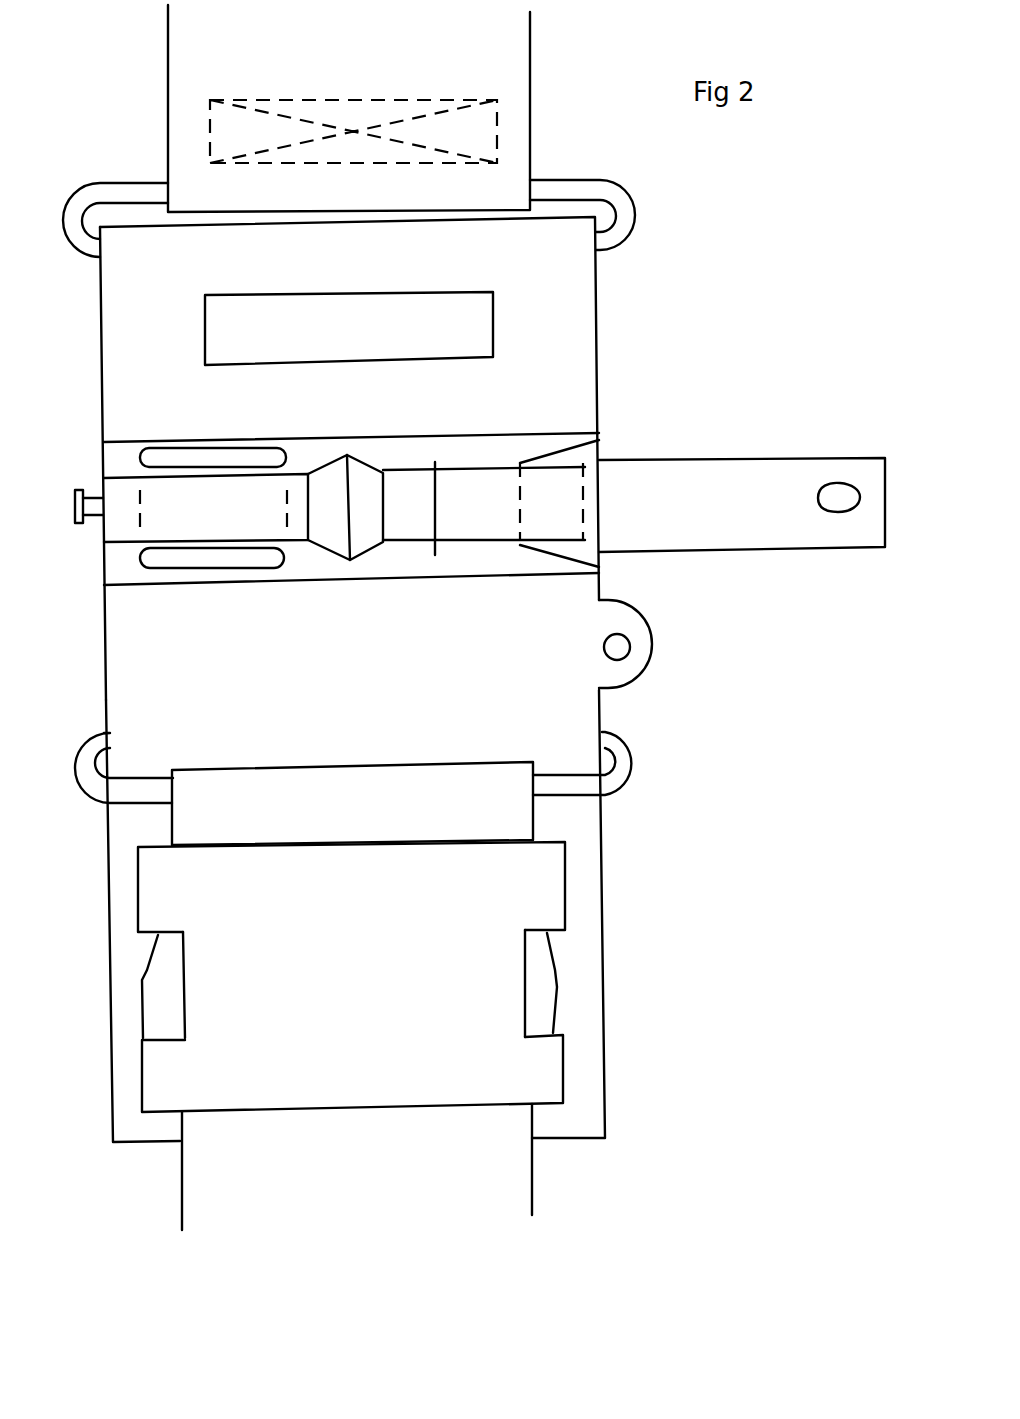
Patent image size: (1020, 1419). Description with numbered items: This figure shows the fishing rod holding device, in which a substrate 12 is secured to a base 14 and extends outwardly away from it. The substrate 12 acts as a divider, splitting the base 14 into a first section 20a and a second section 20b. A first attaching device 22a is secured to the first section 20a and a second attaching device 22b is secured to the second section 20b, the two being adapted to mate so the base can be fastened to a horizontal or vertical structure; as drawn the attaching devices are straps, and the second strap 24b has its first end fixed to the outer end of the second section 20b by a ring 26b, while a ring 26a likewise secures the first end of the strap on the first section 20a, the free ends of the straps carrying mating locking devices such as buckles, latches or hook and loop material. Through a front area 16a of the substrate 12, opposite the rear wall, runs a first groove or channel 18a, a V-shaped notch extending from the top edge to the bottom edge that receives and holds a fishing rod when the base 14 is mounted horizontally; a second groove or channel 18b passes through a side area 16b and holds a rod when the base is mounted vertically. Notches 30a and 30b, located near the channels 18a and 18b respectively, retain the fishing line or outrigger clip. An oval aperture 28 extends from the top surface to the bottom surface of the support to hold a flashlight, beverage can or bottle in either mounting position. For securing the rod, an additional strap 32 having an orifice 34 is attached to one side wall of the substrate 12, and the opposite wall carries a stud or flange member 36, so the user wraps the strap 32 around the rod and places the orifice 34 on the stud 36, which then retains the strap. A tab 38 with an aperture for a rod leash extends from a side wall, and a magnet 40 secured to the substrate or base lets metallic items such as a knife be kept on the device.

The substrate 12 is at (117, 533).
The base 14 is at (587, 1085).
The front area 16a is at (313, 450).
The side area 16b is at (92, 460).
The first groove or channel 18a is at (337, 538).
The second groove or channel 18b is at (585, 553).
The first section 20a is at (567, 215).
The second section 20b is at (615, 1125).
The first attaching device 22a is at (567, 1005).
The second attaching device 22b is at (572, 892).
The second strap 24b is at (510, 825).
The ring 26a is at (643, 218).
The ring 26b is at (652, 765).
The aperture 28 is at (153, 558).
The notch 30a is at (447, 462).
The notch 30b is at (588, 483).
The additional strap 32 is at (785, 538).
The orifice 34 is at (838, 487).
The stud or flange member 36 is at (62, 508).
The tab 38 is at (658, 647).
The magnet 40 is at (475, 328).